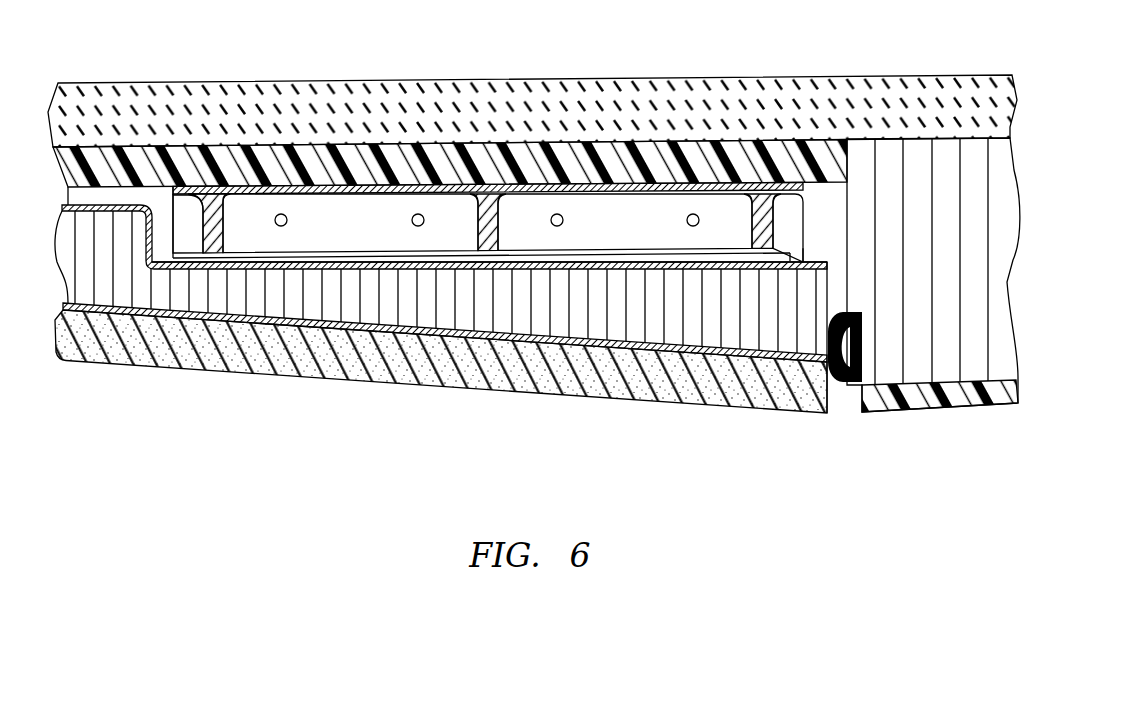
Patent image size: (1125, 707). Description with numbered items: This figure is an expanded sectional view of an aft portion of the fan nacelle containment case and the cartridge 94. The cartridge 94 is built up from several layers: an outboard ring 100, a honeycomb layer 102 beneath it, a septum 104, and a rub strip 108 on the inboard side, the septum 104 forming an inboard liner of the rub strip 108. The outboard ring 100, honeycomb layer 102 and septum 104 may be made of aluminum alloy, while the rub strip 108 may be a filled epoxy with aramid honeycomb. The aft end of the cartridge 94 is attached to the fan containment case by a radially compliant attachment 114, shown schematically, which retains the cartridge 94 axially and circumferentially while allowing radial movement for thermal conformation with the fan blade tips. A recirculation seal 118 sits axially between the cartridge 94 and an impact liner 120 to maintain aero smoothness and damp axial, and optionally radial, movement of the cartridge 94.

The cartridge 94 is at (358, 381).
The outboard ring 100 is at (663, 269).
The honeycomb layer 102 is at (535, 313).
The septum 104 is at (637, 358).
The rub strip 108 is at (404, 362).
The radially compliant attachment 114 is at (605, 229).
The recirculation seal 118 is at (852, 382).
The impact liner 120 is at (995, 317).